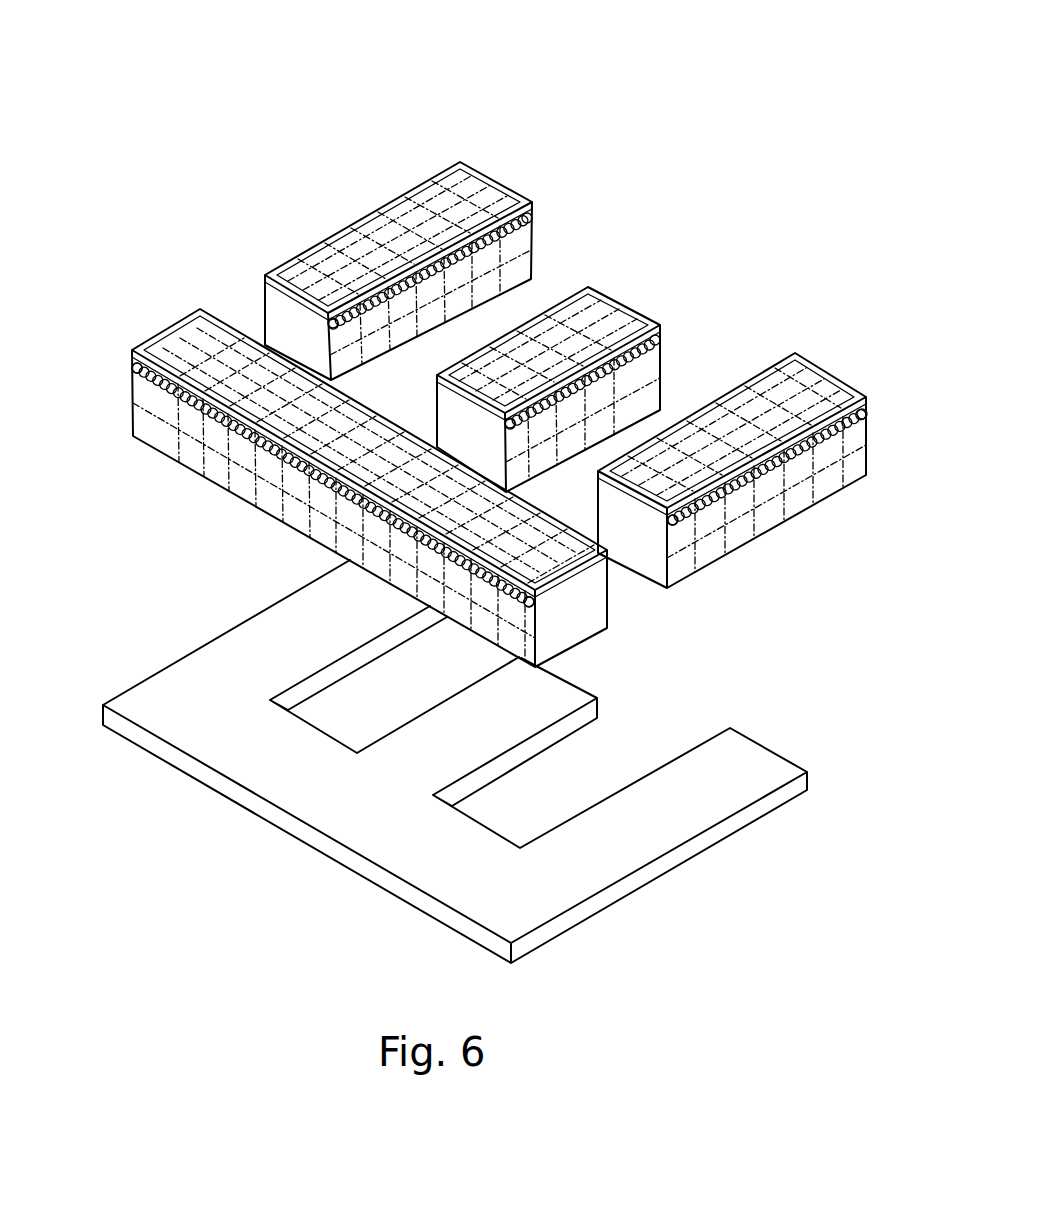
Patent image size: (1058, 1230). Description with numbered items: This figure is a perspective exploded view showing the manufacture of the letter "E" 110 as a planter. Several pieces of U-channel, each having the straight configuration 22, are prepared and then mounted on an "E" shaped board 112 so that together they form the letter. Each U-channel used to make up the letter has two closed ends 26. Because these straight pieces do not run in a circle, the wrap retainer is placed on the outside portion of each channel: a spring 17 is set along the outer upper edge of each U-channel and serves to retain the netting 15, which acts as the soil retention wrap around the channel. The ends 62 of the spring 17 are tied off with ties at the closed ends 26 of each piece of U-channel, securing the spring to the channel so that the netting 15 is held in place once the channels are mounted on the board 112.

The letter "E" 110 is at (301, 106).
The "E" shaped board 112 is at (630, 885).
The netting 15 is at (400, 213).
The spring 17 is at (497, 265).
The straight configuration 22 is at (704, 276).
The closed ends 26 is at (490, 178).
The ends of the spring 62 is at (534, 213).